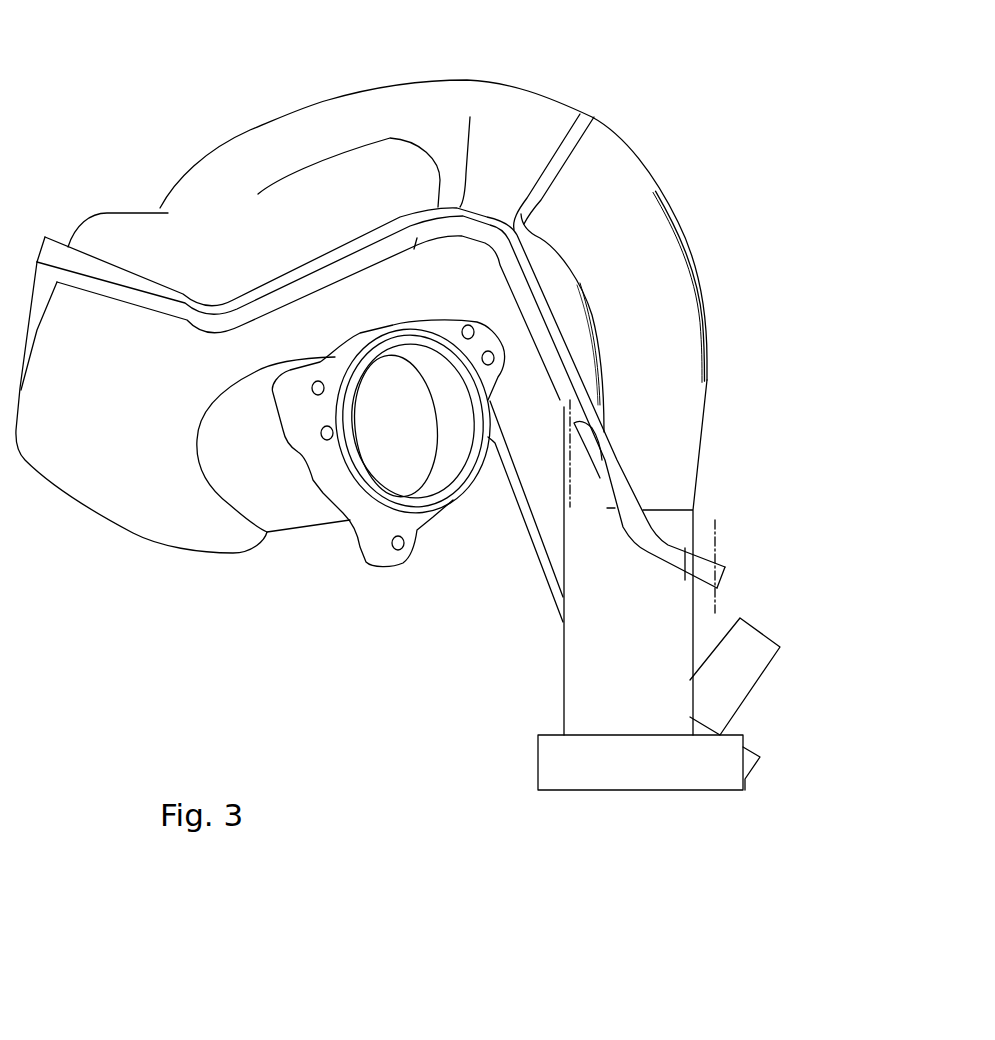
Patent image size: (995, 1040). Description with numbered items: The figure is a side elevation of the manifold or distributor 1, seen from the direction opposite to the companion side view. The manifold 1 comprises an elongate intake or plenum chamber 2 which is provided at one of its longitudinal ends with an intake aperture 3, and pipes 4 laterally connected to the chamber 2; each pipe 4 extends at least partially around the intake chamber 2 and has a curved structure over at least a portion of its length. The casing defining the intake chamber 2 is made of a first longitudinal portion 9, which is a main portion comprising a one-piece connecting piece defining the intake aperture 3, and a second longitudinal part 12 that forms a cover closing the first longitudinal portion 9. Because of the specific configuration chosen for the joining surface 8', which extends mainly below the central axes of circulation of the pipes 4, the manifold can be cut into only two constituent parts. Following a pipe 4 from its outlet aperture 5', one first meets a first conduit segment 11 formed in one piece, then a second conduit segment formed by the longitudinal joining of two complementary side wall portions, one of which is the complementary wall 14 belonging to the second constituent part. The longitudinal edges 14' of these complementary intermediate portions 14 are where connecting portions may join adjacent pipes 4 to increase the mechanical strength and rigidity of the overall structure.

The manifold 1 is at (422, 453).
The intake chamber 2 is at (412, 420).
The intake aperture 3 is at (447, 480).
The pipe 4 is at (728, 258).
The outlet aperture 5' is at (649, 805).
The joining surface 8' is at (576, 141).
The first longitudinal portion 9 is at (190, 532).
The first conduit segment 11 is at (572, 693).
The second longitudinal part 12 is at (142, 225).
The complementary wall 14 is at (453, 231).
The longitudinal edge 14' is at (648, 319).